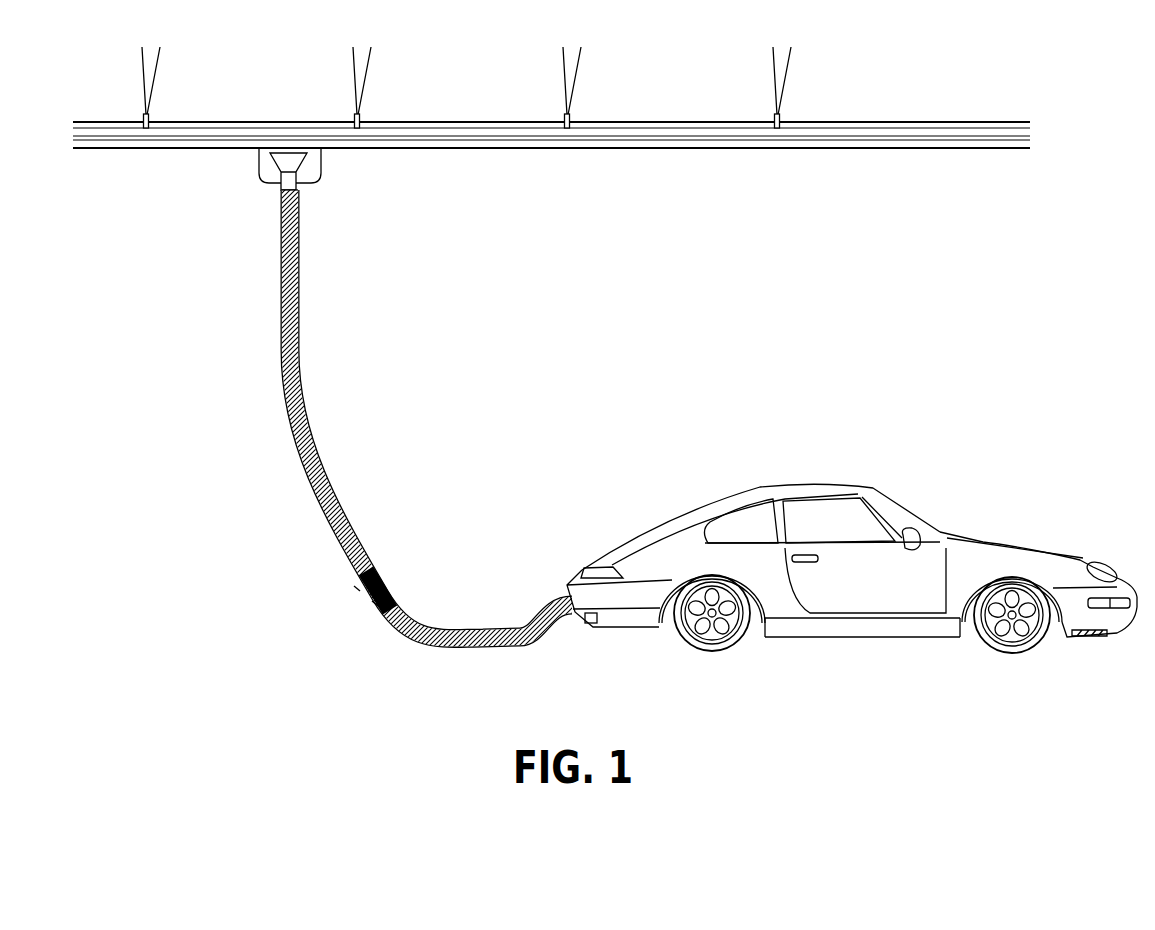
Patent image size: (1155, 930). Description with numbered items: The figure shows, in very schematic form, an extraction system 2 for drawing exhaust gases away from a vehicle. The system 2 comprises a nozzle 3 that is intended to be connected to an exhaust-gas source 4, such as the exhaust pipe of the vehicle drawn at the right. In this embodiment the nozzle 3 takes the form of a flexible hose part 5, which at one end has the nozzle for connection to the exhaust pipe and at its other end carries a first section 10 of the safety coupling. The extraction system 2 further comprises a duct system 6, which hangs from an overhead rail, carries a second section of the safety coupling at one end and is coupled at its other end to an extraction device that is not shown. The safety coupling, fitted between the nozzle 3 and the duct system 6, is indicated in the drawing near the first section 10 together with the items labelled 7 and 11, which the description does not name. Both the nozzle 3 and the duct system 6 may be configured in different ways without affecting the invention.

The extraction system 2 is at (374, 380).
The nozzle 3 is at (507, 645).
The exhaust-gas source 4 is at (568, 625).
The flexible hose part 5 is at (433, 633).
The duct system 6 is at (305, 431).
The sensor 7 is at (347, 595).
The first section 10 is at (361, 607).
The marking section 11 is at (377, 577).